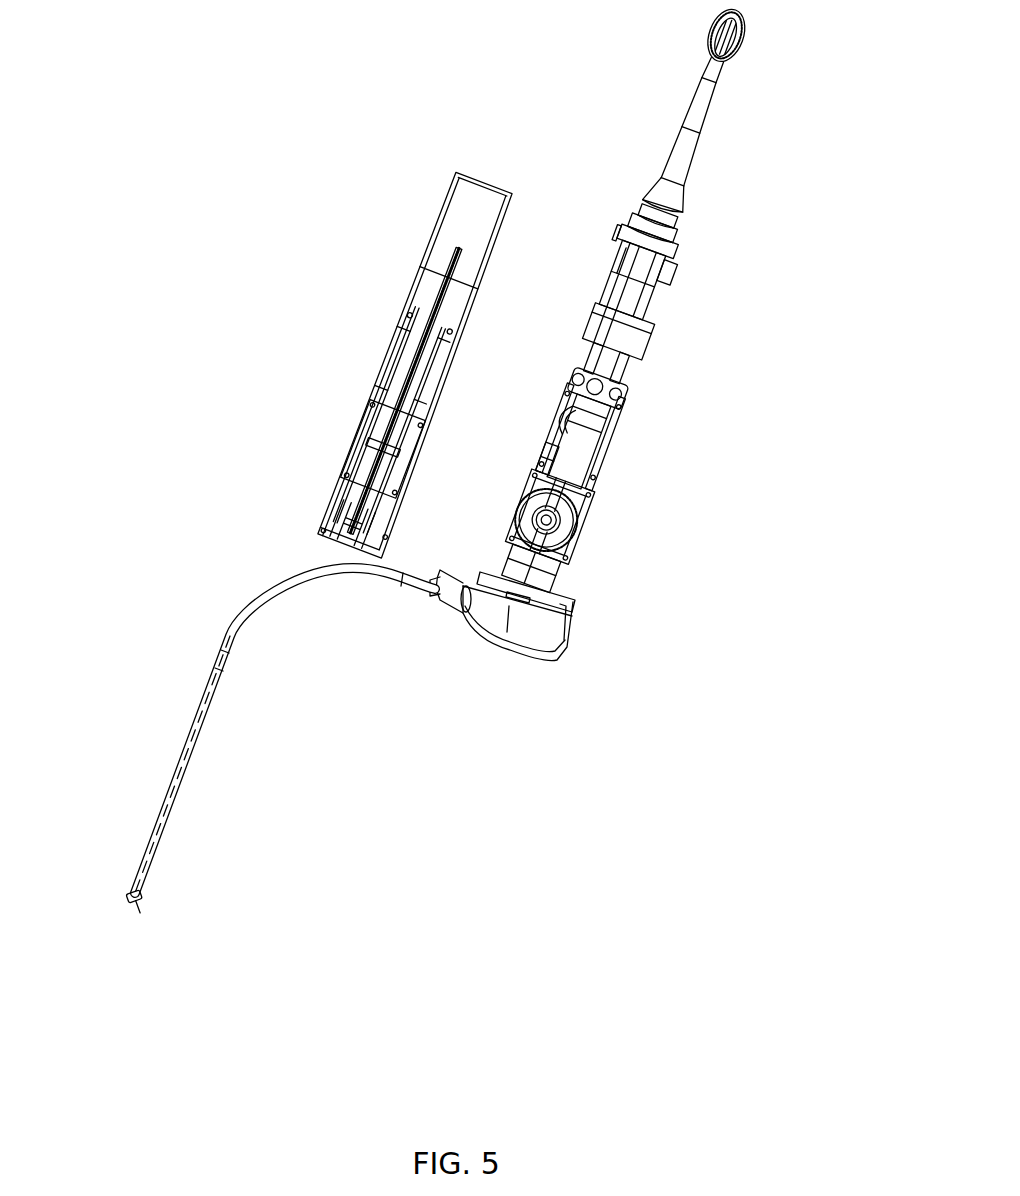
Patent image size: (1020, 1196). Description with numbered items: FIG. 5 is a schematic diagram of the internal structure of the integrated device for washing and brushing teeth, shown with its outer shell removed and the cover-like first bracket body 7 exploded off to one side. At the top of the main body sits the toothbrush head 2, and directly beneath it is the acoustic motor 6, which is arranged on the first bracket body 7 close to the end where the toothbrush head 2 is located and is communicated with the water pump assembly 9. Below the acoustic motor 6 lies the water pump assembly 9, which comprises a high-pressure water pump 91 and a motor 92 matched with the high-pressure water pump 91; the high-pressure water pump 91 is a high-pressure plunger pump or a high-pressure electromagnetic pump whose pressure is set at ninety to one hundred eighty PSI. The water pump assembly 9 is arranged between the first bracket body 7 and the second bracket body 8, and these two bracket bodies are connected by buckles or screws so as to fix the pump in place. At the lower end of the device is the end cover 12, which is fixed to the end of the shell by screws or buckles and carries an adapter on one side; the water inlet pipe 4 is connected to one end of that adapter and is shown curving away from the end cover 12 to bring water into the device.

The toothbrush head 2 is at (685, 188).
The water inlet pipe 4 is at (242, 612).
The acoustic motor 6 is at (653, 310).
The bracket body 1 7 is at (385, 368).
The bracket body 2 8 is at (548, 442).
The water pump assembly 9 is at (593, 428).
The high-pressure water pump 91 is at (545, 456).
The motor 92 is at (553, 580).
The end cover 12 is at (565, 657).